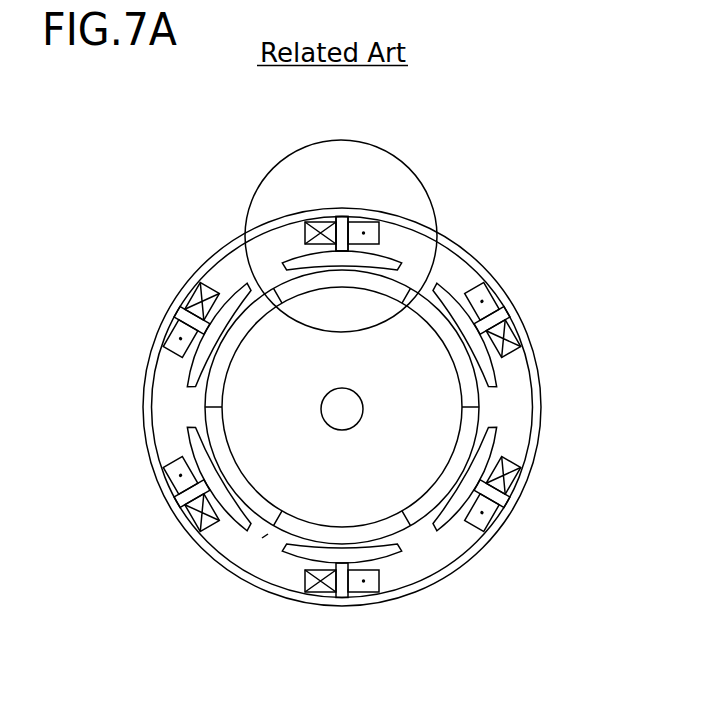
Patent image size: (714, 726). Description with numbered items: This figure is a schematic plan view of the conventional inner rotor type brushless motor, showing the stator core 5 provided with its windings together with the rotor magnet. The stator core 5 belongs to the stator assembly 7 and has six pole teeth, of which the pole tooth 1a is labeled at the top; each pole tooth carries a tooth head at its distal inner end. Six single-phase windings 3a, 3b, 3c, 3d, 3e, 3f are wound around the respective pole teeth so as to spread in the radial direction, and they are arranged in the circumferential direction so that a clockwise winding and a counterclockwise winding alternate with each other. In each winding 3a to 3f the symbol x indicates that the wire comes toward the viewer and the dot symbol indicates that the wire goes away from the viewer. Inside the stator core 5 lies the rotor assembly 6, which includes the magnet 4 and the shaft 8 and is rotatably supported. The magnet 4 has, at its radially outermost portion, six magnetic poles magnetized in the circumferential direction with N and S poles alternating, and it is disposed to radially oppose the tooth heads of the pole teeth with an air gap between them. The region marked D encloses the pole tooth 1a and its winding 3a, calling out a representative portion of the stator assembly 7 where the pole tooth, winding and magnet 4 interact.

The pole tooth 1a is at (345, 222).
The winding 3a is at (362, 224).
The winding 3b is at (485, 326).
The winding 3c is at (493, 498).
The winding 3d is at (343, 588).
The winding 3e is at (175, 490).
The winding 3f is at (197, 320).
The magnet 4 is at (342, 412).
The stator core 5 is at (294, 212).
The rotor assembly 6 is at (300, 530).
The stator assembly 7 is at (356, 203).
The shaft 8 is at (260, 531).
The detail region D is at (261, 185).